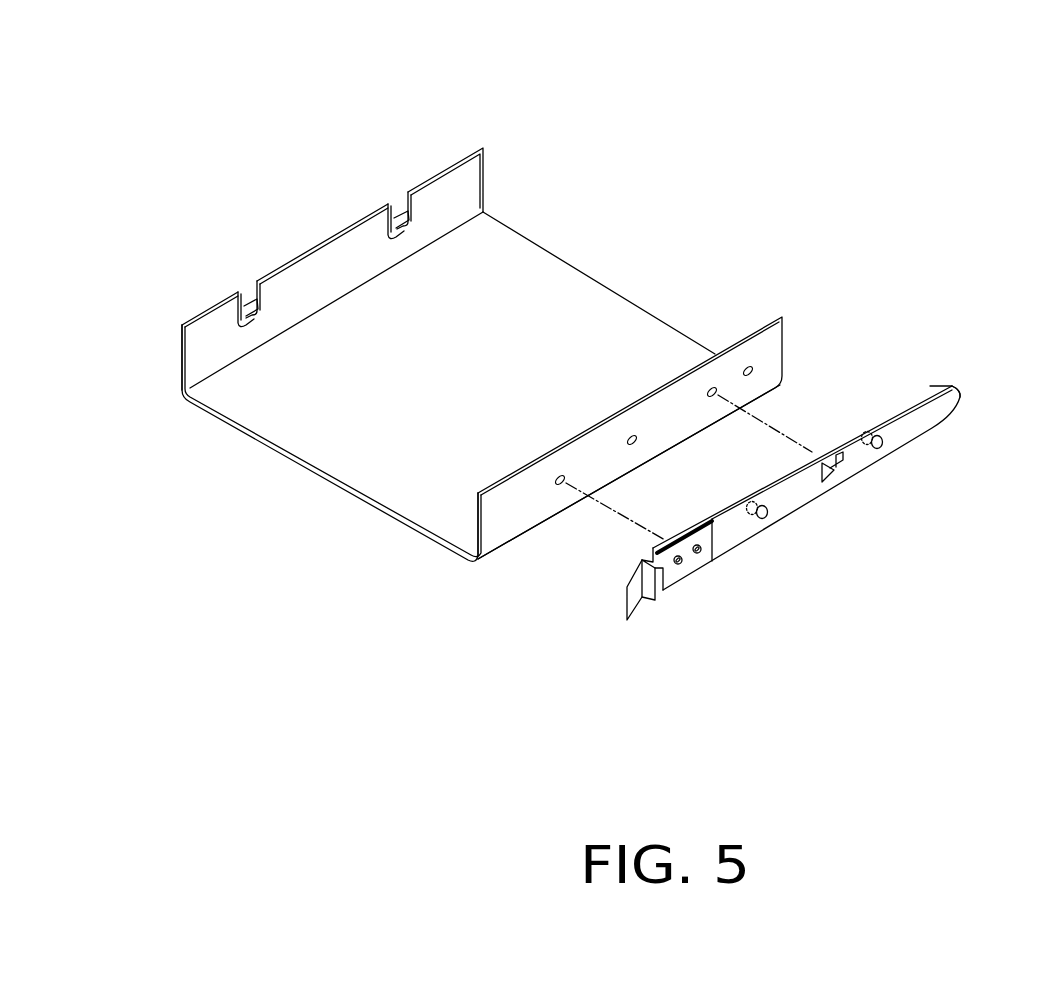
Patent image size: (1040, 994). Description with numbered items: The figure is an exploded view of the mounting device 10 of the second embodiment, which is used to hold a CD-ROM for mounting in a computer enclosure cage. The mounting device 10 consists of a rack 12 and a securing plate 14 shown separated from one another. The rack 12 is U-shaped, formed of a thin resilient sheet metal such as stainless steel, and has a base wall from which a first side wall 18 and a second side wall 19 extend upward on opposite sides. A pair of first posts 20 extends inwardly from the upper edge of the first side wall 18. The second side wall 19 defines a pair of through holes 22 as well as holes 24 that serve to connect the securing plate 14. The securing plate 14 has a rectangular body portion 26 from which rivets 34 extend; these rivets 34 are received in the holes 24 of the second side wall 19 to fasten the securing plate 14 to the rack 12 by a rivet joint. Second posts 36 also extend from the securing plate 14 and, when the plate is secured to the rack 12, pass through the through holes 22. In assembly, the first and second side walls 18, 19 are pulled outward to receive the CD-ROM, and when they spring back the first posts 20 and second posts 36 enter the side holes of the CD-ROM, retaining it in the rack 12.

The mounting device 10 is at (900, 57).
The rack 12 is at (312, 476).
The securing plate 14 is at (748, 540).
The first side wall 18 is at (195, 347).
The second side wall 19 is at (493, 527).
The first posts 20 is at (248, 308).
The through holes 22 is at (712, 389).
The holes 24 is at (755, 369).
The body portion 26 is at (928, 412).
The rivets 34 is at (878, 445).
The second posts 36 is at (835, 470).